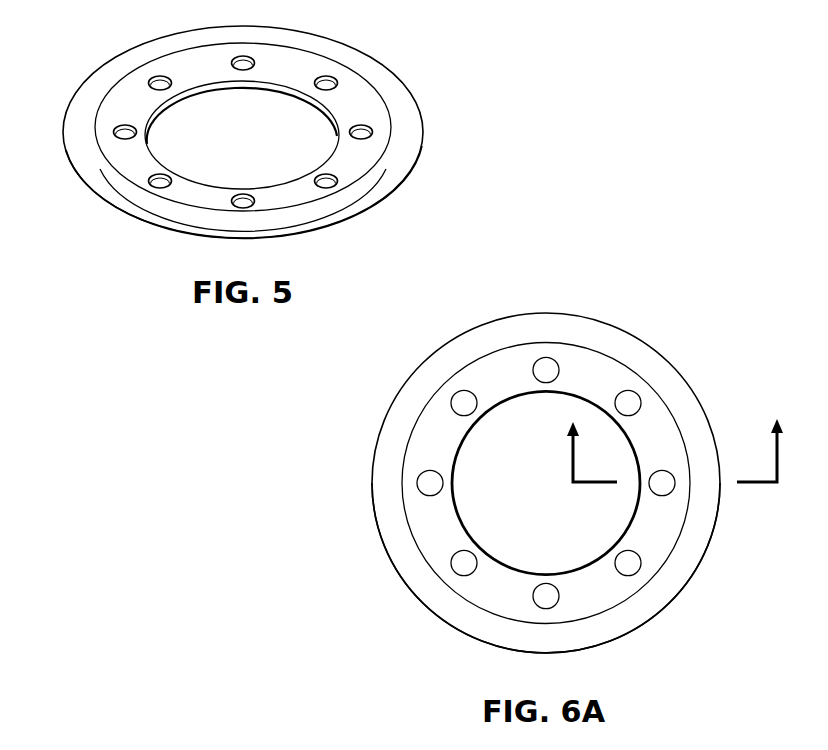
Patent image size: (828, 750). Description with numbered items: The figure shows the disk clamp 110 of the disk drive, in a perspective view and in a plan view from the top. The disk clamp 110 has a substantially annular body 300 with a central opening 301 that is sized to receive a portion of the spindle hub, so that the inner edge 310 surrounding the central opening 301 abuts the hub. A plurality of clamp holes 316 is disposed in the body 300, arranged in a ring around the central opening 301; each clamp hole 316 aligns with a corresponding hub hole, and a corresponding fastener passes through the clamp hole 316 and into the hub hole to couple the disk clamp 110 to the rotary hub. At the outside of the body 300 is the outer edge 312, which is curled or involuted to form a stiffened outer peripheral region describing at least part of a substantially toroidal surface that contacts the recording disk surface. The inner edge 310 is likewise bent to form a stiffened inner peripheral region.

In FIG. 5, the disk clamp 110 is at (300, 132).
In FIG. 6A, the disk clamp 110 is at (556, 454).
In FIG. 5, the annular body 300 is at (108, 66).
In FIG. 6A, the annular body 300 is at (517, 313).
In FIG. 5, the central opening 301 is at (303, 157).
In FIG. 6A, the central opening 301 is at (612, 524).
In FIG. 5, the inner edge 310 is at (242, 87).
In FIG. 6A, the inner edge 310 is at (462, 513).
In FIG. 6A, the outer edge 312 is at (438, 617).
In FIG. 5, the clamp holes 316 is at (153, 181).
In FIG. 6A, the clamp holes 316 is at (420, 487).